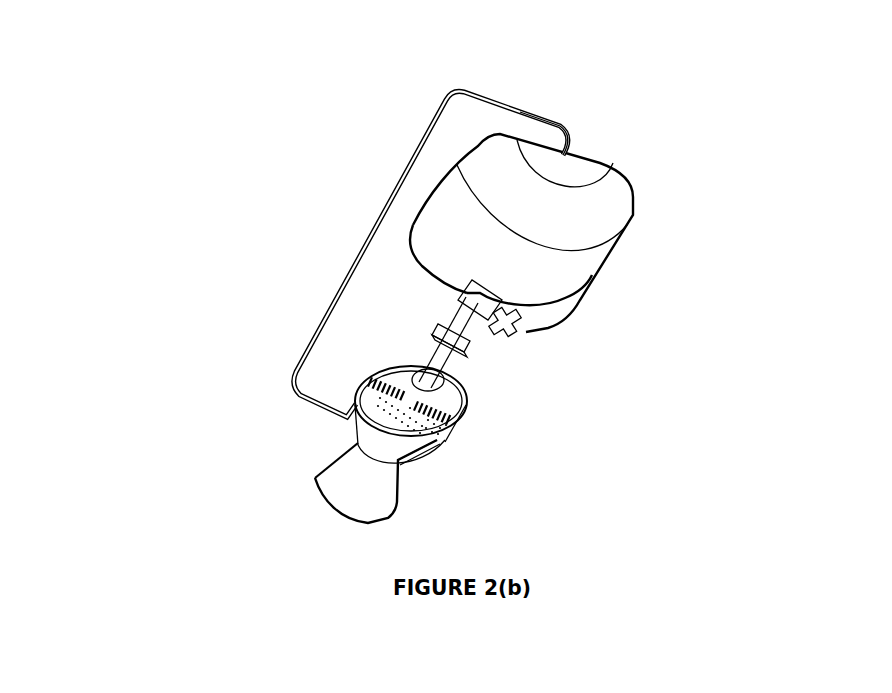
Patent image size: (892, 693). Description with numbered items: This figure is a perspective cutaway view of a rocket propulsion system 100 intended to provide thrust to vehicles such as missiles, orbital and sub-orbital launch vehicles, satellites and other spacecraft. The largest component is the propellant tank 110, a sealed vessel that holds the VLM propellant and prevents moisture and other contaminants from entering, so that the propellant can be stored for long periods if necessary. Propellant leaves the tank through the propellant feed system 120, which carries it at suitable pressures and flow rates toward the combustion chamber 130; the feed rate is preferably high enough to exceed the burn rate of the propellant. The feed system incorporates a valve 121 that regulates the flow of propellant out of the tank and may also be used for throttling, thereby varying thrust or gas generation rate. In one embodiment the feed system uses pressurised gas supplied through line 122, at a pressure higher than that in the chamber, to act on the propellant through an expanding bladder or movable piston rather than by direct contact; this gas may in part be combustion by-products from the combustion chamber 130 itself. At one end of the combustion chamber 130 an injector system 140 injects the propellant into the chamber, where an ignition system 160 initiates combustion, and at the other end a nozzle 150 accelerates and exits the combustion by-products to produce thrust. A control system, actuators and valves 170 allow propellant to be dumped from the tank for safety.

The rocket propulsion system 100 is at (260, 116).
The propellant tank 110 is at (582, 243).
The propellant feed system 120 is at (465, 302).
The valve 121 is at (433, 309).
The pressurised gas line 122 is at (545, 117).
The combustion chamber 130 is at (370, 383).
The injector system 140 is at (388, 432).
The nozzle 150 is at (372, 493).
The ignition system 160 is at (410, 405).
The control system, actuators and valves 170 is at (519, 334).